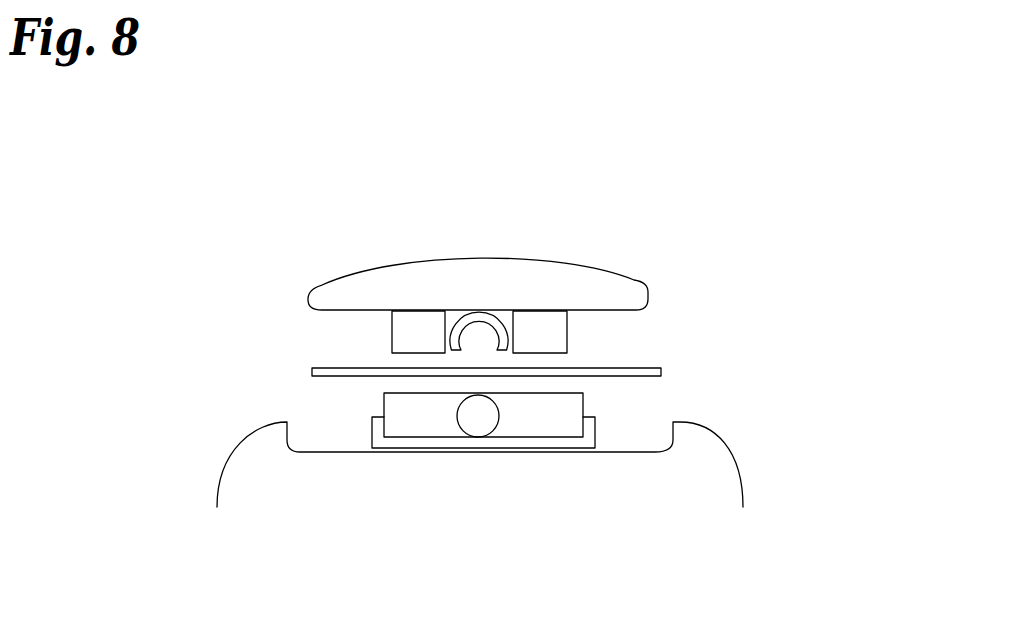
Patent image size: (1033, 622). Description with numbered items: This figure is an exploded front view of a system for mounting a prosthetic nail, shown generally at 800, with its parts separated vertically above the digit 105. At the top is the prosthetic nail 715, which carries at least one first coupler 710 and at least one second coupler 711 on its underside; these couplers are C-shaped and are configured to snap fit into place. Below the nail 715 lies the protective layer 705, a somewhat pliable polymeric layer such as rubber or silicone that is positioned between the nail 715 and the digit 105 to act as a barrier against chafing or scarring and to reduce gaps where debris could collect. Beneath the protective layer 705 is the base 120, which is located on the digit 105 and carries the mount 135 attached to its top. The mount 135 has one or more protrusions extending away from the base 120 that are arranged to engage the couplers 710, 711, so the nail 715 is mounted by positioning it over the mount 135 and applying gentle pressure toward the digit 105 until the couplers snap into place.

The button assembly 800 is at (749, 126).
The prosthetic nail 715 is at (562, 280).
The first coupler 710 is at (545, 325).
The second coupler 711 is at (497, 320).
The protective layer 705 is at (661, 372).
The mount 135 is at (403, 418).
The base 120 is at (588, 442).
The digit 105 is at (243, 460).